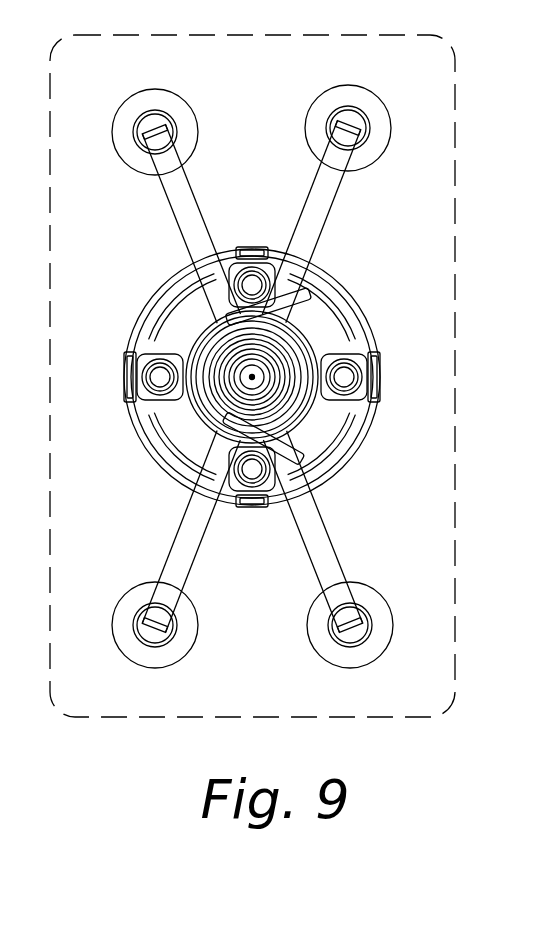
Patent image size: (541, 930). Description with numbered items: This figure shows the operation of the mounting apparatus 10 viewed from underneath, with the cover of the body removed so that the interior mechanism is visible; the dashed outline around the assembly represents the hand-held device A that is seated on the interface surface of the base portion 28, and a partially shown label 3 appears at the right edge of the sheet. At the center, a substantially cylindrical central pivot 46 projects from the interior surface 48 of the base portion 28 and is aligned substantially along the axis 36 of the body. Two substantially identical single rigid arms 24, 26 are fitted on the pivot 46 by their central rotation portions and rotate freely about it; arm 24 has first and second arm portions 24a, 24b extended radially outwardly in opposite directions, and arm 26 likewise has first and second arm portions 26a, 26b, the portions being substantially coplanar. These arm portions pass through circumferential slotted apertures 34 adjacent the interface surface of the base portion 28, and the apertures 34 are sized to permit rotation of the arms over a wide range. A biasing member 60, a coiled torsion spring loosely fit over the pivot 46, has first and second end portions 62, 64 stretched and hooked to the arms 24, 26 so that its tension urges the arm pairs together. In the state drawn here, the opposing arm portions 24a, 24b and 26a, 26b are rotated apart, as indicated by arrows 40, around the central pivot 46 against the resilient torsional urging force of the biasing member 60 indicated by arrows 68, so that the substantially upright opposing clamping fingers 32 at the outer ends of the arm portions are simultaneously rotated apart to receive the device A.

The hand-held device A is at (457, 103).
The mounting apparatus 10 is at (473, 225).
The partial label 3 is at (535, 320).
The clamping fingers 32 is at (130, 107).
The arrows 40 is at (110, 145).
The arm 26 is at (244, 379).
The first arm portion 26a is at (327, 575).
The second arm portion 26b is at (170, 182).
The arm 24 is at (217, 377).
The first arm portion 24a is at (172, 572).
The second arm portion 24b is at (320, 187).
The circumferential slotted apertures 34 is at (138, 332).
The interior surface 48 is at (172, 322).
The base portion 28 is at (122, 377).
The biasing member 60 is at (207, 405).
The central pivot 46 is at (232, 358).
The axis 36 is at (250, 378).
The second end portion 64 is at (302, 290).
The first end portion 62 is at (302, 462).
The arrows 68 is at (336, 234).